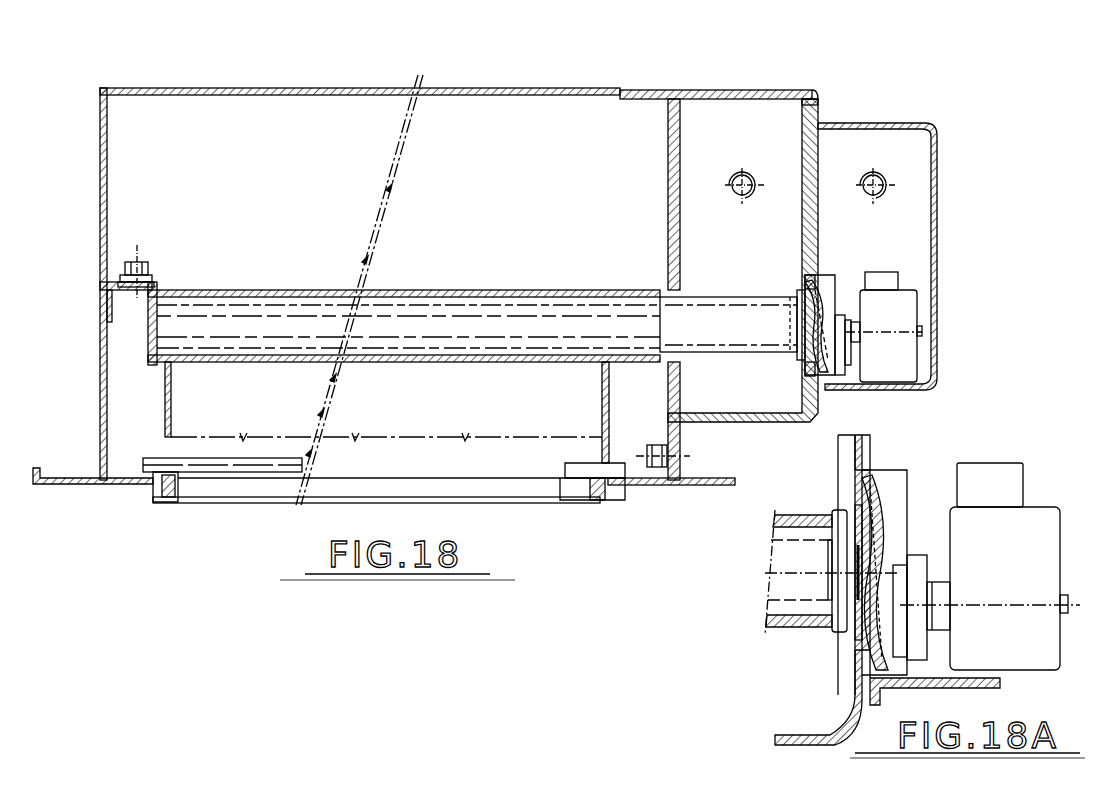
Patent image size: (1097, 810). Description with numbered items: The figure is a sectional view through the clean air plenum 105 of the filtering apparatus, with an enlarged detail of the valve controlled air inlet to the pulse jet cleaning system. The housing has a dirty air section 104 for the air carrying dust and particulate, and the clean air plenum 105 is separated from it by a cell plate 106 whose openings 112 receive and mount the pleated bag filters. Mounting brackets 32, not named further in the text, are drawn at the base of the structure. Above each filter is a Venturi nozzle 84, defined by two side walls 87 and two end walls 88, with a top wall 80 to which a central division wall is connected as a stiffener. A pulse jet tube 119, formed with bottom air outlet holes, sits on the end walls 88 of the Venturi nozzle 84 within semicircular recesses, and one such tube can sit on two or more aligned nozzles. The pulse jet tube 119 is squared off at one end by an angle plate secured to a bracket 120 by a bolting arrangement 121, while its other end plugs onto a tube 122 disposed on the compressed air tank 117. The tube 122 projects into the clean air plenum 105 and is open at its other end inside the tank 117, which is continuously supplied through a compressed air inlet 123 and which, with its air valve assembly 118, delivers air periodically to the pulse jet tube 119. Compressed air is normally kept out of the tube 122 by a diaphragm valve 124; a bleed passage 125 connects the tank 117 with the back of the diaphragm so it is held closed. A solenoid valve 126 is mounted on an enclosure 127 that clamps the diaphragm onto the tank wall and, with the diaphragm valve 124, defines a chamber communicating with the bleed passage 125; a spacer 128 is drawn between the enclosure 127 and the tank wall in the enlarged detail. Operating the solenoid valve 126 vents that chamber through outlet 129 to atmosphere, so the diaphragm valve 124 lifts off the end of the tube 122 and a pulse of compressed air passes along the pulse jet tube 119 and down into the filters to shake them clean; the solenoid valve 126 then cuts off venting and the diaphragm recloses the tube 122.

In FIG. 18, the mounting bracket 32 is at (155, 487).
In FIG. 18, the top wall 80 is at (143, 460).
In FIG. 18, the Venturi nozzle 84 is at (560, 355).
In FIG. 18, the side walls 87 is at (288, 375).
In FIG. 18, the end walls 88 is at (165, 405).
In FIG. 18, the dirty air section 104 is at (230, 520).
In FIG. 18, the clean air plenum 105 is at (600, 82).
In FIG. 18, the cell plate 106 is at (640, 487).
In FIG. 18, the openings 112 is at (258, 505).
In FIG. 18, the compressed air tank 117 is at (780, 92).
In FIG. 18, the air valve assembly 118 is at (905, 125).
In FIG. 18, the pulse jet tube 119 is at (255, 290).
In FIG. 18, the bracket 120 is at (158, 282).
In FIG. 18, the bolting arrangement 121 is at (140, 268).
In FIG. 18, the tube 122 is at (762, 358).
In FIG. 18A, the tube 122 is at (803, 630).
In FIG. 18, the compressed air inlet 123 is at (742, 175).
In FIG. 18, the diaphragm valve 124 is at (800, 300).
In FIG. 18A, the diaphragm valve 124 is at (838, 515).
In FIG. 18, the bleed passage 125 is at (805, 285).
In FIG. 18A, the bleed passage 125 is at (840, 478).
In FIG. 18, the solenoid valve 126 is at (895, 338).
In FIG. 18A, the solenoid valve 126 is at (1003, 565).
In FIG. 18, the enclosure 127 is at (830, 300).
In FIG. 18A, the enclosure 127 is at (882, 492).
In FIG. 18A, the spacer 128 is at (862, 520).
In FIG. 18, the outlet 129 is at (882, 181).